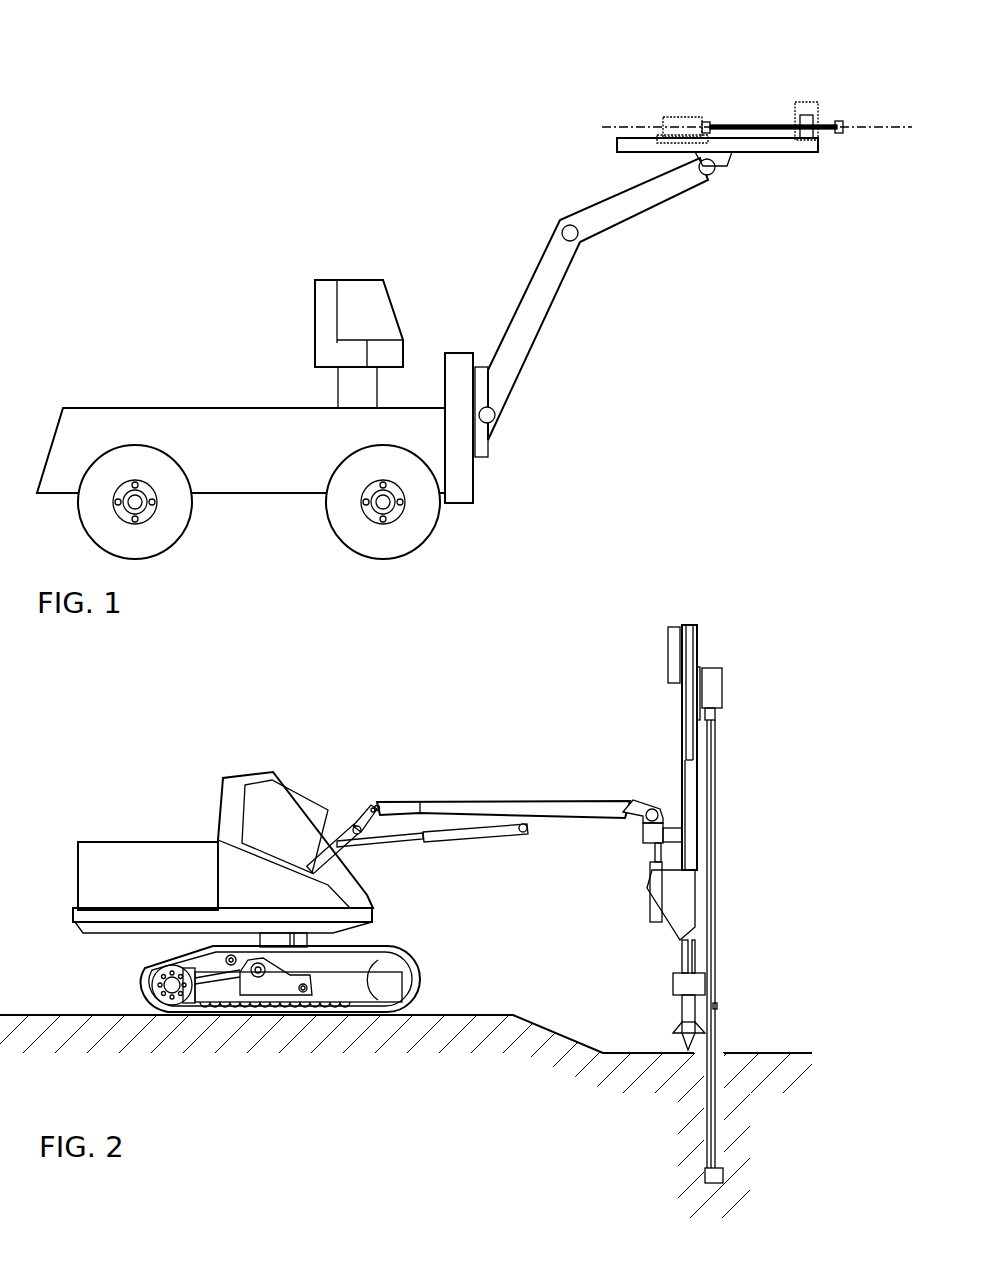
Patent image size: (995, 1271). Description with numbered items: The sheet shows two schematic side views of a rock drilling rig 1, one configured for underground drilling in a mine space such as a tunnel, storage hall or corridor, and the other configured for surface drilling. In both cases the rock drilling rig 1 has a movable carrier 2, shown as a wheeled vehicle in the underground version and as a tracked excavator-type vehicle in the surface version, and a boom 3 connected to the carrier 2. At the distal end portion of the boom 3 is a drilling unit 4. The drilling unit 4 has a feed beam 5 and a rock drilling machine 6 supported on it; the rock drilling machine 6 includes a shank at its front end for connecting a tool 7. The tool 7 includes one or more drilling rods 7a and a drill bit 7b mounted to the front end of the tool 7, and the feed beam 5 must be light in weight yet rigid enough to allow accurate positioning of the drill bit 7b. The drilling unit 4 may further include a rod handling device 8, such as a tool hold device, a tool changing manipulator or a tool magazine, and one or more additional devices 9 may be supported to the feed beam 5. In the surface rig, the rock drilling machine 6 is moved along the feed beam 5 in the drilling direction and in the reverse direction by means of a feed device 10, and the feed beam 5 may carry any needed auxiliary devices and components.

In FIG. 1, the rock drilling rig 1 is at (128, 288).
In FIG. 2, the rock drilling rig 1 is at (181, 713).
In FIG. 1, the movable carrier 2 is at (70, 374).
In FIG. 2, the movable carrier 2 is at (123, 799).
In FIG. 1, the boom 3 is at (551, 266).
In FIG. 2, the boom 3 is at (478, 810).
In FIG. 1, the drilling unit 4 is at (757, 114).
In FIG. 2, the drilling unit 4 is at (723, 902).
In FIG. 1, the feed beam 5 is at (760, 148).
In FIG. 2, the feed beam 5 is at (683, 727).
In FIG. 1, the rock drilling machine 6 is at (688, 124).
In FIG. 2, the rock drilling machine 6 is at (712, 688).
In FIG. 1, the tool 7 is at (764, 97).
In FIG. 2, the tool 7 is at (775, 960).
In FIG. 1, the drilling rod 7a is at (737, 125).
In FIG. 2, the drilling rod 7a is at (713, 892).
In FIG. 1, the drill bit 7b is at (847, 132).
In FIG. 2, the drill bit 7b is at (724, 1180).
In FIG. 1, the rod handling device 8 is at (806, 121).
In FIG. 1, the additional device 9 is at (800, 105).
In FIG. 2, the feed device 10 is at (668, 657).